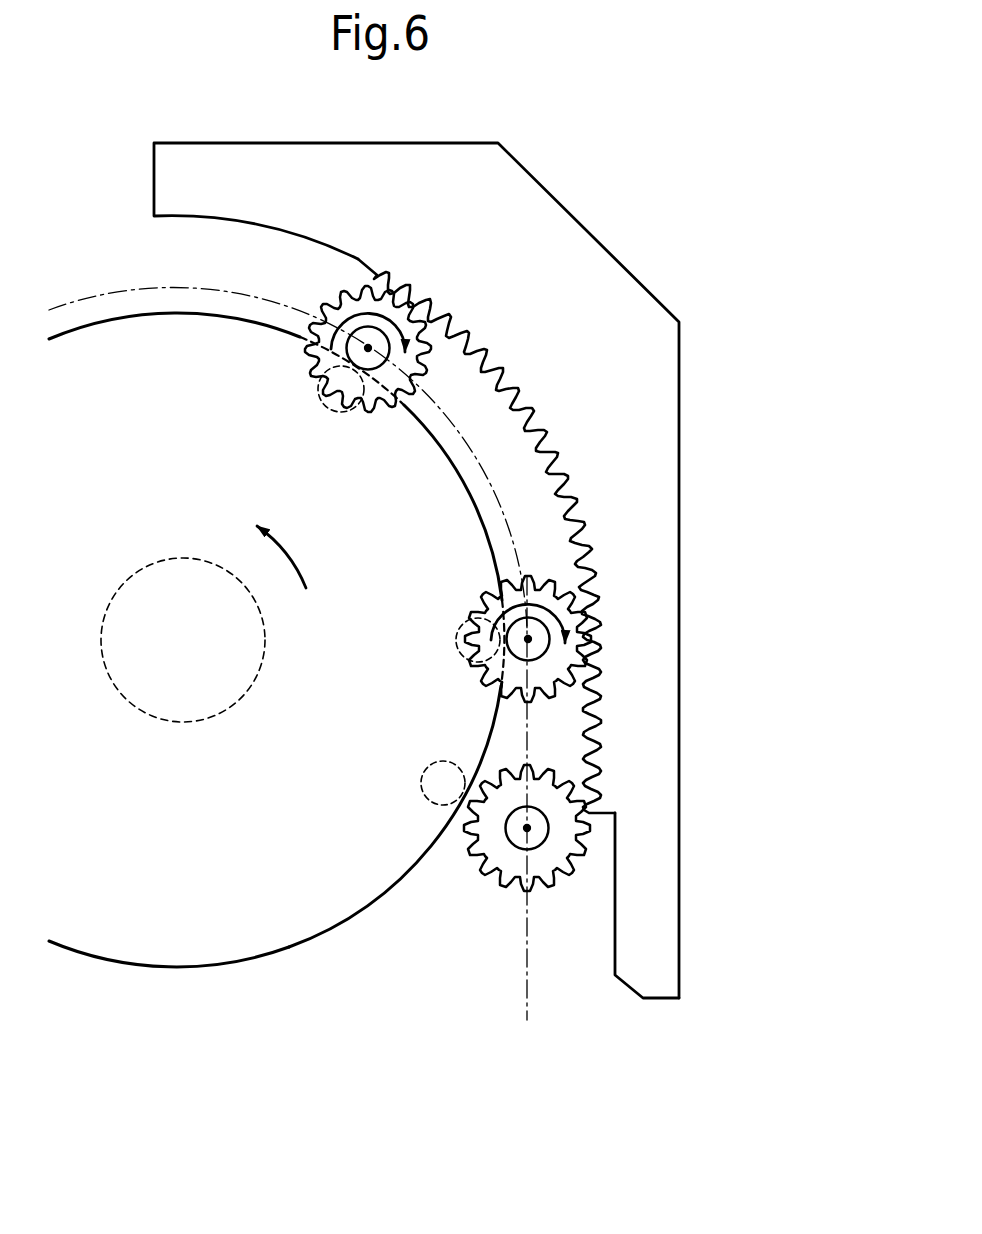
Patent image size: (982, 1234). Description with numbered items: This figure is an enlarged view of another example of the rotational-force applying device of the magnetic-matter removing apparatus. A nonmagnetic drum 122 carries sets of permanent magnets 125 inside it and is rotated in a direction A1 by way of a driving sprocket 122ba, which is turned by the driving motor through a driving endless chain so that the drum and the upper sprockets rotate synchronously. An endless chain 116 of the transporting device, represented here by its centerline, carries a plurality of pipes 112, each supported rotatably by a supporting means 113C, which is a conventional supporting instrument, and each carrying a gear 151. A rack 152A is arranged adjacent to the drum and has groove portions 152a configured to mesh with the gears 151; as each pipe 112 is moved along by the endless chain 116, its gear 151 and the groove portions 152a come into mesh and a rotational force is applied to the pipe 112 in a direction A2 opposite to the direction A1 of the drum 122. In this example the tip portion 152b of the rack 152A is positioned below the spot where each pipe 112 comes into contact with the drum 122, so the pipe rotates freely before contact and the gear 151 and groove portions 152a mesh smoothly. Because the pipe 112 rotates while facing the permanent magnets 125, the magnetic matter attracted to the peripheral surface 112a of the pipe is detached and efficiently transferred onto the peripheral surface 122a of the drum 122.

The drum 122 is at (302, 948).
The peripheral surface of the drum 122a is at (208, 968).
The driving sprocket 122ba is at (186, 722).
The endless chain 116 is at (526, 1002).
The direction of rotation of the drum A1 is at (286, 554).
The direction of rotation of the pipe A2 is at (580, 618).
The rack 152A is at (581, 217).
The groove portions 152a is at (580, 537).
The tip portion of the rack 152b is at (657, 1000).
The gear 151 is at (431, 357).
The pipe 112 is at (384, 377).
The peripheral surface of the pipe 112a is at (520, 692).
The supporting means 113C is at (366, 350).
The permanent magnets 125 is at (330, 413).